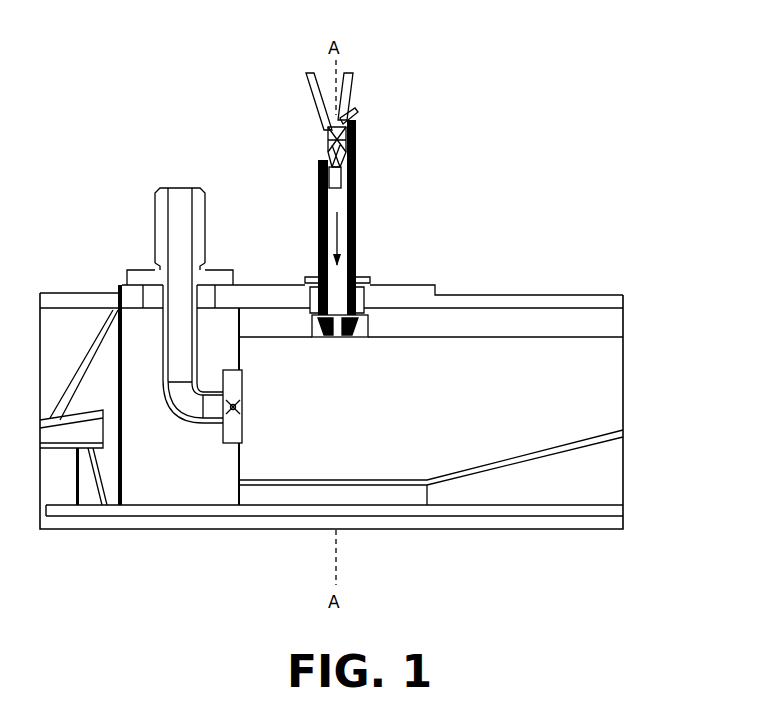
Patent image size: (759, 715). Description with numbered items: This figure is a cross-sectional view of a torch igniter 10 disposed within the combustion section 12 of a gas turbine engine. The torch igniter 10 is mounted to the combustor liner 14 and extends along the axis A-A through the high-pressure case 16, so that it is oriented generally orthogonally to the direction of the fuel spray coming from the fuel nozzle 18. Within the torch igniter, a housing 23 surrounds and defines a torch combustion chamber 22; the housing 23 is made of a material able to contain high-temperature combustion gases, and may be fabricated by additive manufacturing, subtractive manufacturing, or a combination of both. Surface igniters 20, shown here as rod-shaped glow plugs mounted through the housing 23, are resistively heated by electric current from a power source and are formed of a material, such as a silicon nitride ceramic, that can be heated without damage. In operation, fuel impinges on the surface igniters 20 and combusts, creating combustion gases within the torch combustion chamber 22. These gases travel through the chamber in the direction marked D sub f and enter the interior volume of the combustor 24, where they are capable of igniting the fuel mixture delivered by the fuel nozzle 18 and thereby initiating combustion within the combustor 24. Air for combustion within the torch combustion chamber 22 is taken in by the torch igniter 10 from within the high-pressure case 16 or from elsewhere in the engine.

The torch igniter 10 is at (452, 144).
The combustion section 12 is at (176, 148).
The combustor liner 14 is at (563, 333).
The high-pressure case 16 is at (469, 295).
The fuel nozzle 18 is at (221, 383).
The surface igniter 20 is at (359, 82).
The torch combustion chamber 22 is at (331, 207).
The housing 23 is at (359, 170).
The combustor 24 is at (402, 437).